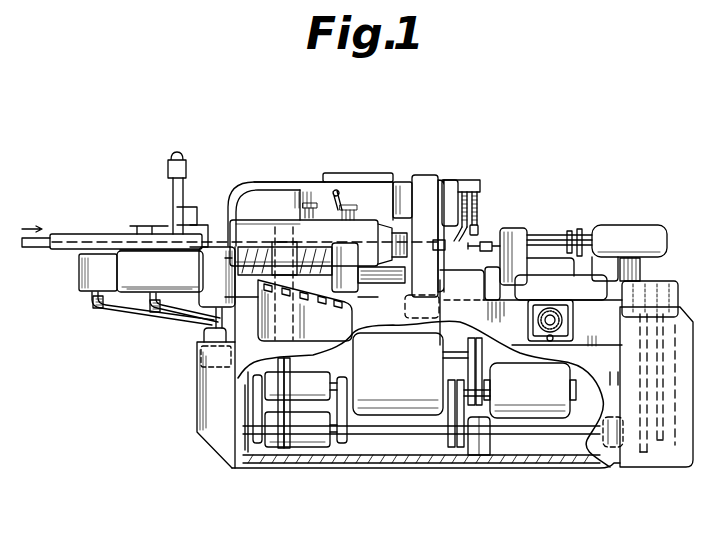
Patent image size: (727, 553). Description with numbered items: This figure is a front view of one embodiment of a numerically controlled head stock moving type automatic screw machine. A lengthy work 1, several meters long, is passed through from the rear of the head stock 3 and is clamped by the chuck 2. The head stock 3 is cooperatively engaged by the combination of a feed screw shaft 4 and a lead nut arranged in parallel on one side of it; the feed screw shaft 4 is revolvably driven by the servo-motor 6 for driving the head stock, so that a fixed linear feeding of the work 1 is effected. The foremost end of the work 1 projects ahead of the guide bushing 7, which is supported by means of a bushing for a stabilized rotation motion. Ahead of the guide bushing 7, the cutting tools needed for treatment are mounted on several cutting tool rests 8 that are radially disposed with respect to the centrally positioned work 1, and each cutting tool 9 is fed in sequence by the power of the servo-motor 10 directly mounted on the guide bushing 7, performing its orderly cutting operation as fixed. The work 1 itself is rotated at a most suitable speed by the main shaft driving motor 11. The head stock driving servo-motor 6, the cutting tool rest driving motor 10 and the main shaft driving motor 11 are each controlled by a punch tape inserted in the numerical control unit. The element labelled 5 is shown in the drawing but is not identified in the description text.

The work 1 is at (47, 250).
The chuck 2 is at (392, 214).
The head stock 3 is at (252, 192).
The feed screw shaft 4 is at (254, 297).
The screw gear 5 is at (278, 239).
The servo-motor for driving the head stock 6 is at (163, 283).
The guide bushing 7 is at (416, 287).
The cutting tool rests 8 is at (455, 180).
The cutting tool 9 is at (474, 235).
The servo-motor for driving the cutting tool rests 10 is at (375, 173).
The main shaft driving motor 11 is at (555, 384).